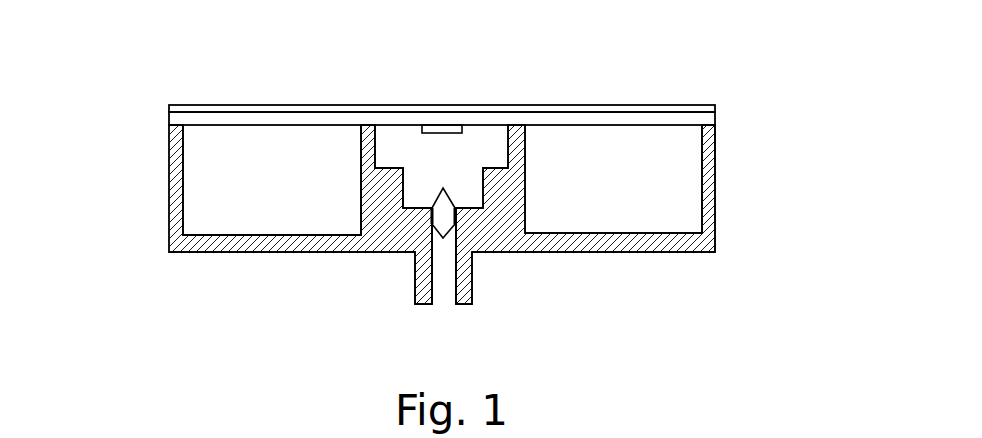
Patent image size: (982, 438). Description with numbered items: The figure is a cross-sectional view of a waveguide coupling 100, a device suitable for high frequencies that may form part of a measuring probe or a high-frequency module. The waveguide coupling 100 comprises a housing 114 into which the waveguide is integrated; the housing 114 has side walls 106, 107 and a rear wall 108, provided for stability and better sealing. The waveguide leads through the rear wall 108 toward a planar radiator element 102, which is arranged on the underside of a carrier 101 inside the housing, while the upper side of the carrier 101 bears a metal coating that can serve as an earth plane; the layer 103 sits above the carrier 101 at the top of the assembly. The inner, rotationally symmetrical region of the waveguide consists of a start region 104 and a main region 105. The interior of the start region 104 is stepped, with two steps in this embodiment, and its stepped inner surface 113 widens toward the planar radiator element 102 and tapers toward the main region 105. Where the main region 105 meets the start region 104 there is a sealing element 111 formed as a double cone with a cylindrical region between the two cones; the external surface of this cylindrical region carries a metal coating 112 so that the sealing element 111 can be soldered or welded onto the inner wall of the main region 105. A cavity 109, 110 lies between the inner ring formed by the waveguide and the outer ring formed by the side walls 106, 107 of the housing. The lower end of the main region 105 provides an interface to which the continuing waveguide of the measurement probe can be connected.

The waveguide coupling 100 is at (436, 195).
The carrier 101 is at (555, 120).
The planar radiator element 102 is at (442, 106).
The cover plate 103 is at (510, 106).
The start region of the waveguide 104 is at (395, 145).
The main region of the waveguide 105 is at (446, 289).
The side wall 106 is at (168, 178).
The side wall 107 is at (717, 130).
The rear wall 108 is at (676, 253).
The cavity 109 is at (198, 152).
The cavity 110 is at (688, 203).
The sealing element 111 is at (445, 204).
The metal coating 112 is at (430, 216).
The stepped inner surface 113 is at (402, 187).
The housing 114 is at (717, 172).